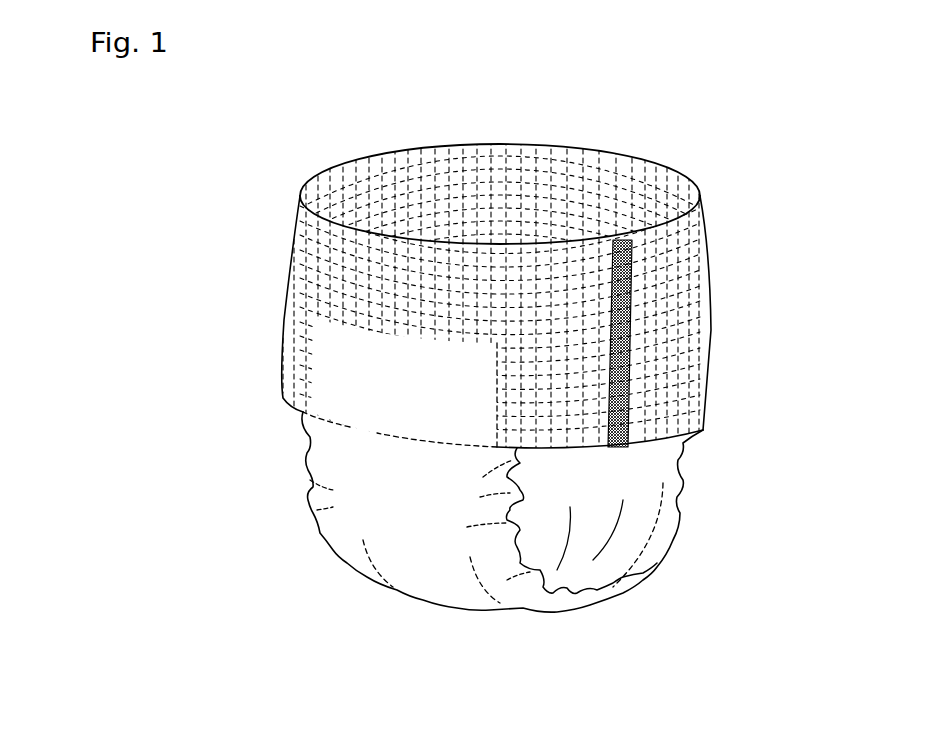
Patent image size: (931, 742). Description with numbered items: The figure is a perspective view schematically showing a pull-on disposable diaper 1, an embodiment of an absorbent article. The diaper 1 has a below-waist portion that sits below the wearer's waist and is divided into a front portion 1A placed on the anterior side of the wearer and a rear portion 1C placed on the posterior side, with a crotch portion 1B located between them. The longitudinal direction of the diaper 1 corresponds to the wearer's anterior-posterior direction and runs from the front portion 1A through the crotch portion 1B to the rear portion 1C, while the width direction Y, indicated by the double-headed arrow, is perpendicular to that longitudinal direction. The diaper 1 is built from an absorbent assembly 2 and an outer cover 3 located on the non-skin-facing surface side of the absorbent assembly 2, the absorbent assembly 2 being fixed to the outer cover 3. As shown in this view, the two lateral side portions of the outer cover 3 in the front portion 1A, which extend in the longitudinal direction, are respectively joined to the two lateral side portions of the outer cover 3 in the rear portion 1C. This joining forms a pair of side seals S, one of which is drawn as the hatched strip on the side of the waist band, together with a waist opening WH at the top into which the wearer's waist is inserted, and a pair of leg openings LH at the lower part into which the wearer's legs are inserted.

The pull-on disposable diaper 1 is at (703, 116).
The front portion 1A is at (484, 266).
The crotch portion 1B is at (454, 634).
The rear portion 1C is at (618, 151).
The absorbent assembly 2 is at (343, 533).
The outer cover 3 is at (330, 348).
The side seal S is at (390, 152).
The waist opening WH is at (488, 182).
The leg opening LH is at (293, 490).
The width direction Y is at (357, 690).